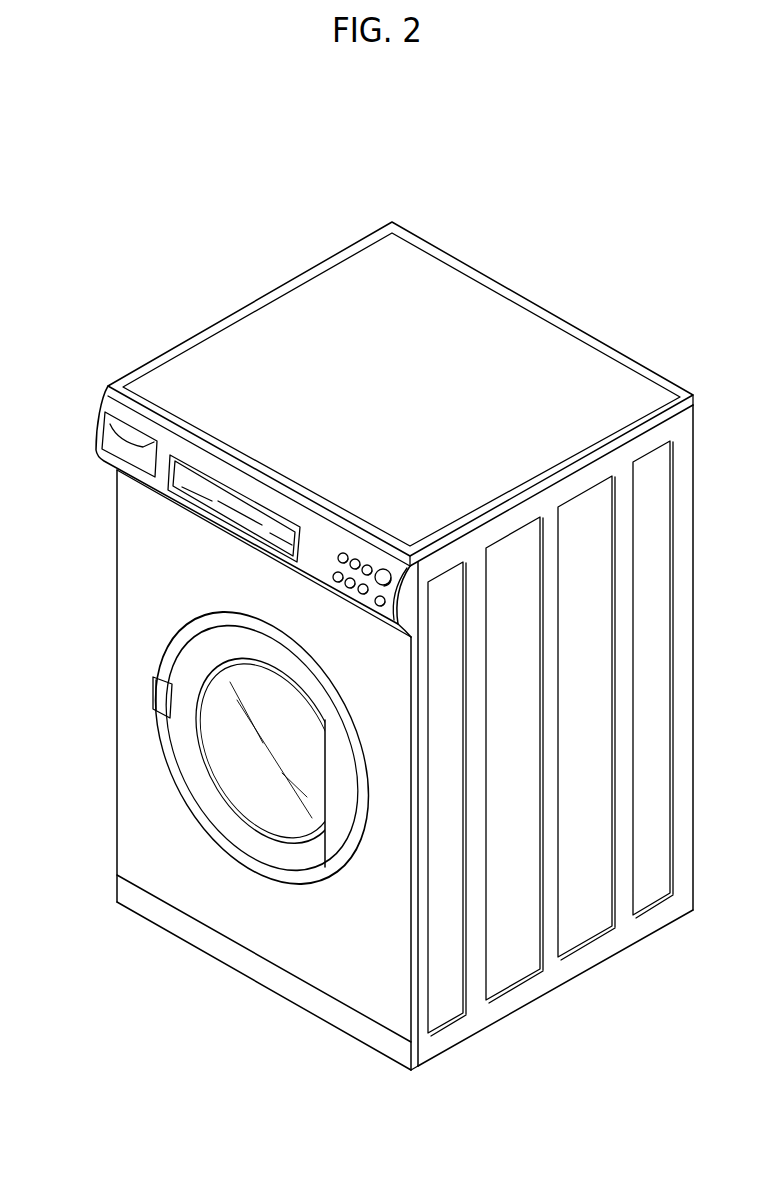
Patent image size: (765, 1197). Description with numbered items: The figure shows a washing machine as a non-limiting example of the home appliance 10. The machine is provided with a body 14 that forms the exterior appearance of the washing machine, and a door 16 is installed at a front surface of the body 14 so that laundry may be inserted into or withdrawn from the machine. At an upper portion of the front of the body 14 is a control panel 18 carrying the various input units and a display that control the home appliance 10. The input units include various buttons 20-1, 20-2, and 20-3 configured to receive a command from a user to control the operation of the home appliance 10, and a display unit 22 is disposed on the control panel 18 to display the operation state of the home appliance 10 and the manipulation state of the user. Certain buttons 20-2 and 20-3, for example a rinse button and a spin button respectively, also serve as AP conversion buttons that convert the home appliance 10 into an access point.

The home appliance 10 is at (258, 205).
The body 14 is at (525, 332).
The door 16 is at (218, 763).
The control panel 18 is at (317, 543).
The button 20-1 is at (382, 568).
The button 20-2 is at (343, 552).
The button 20-3 is at (335, 578).
The display unit 22 is at (208, 487).